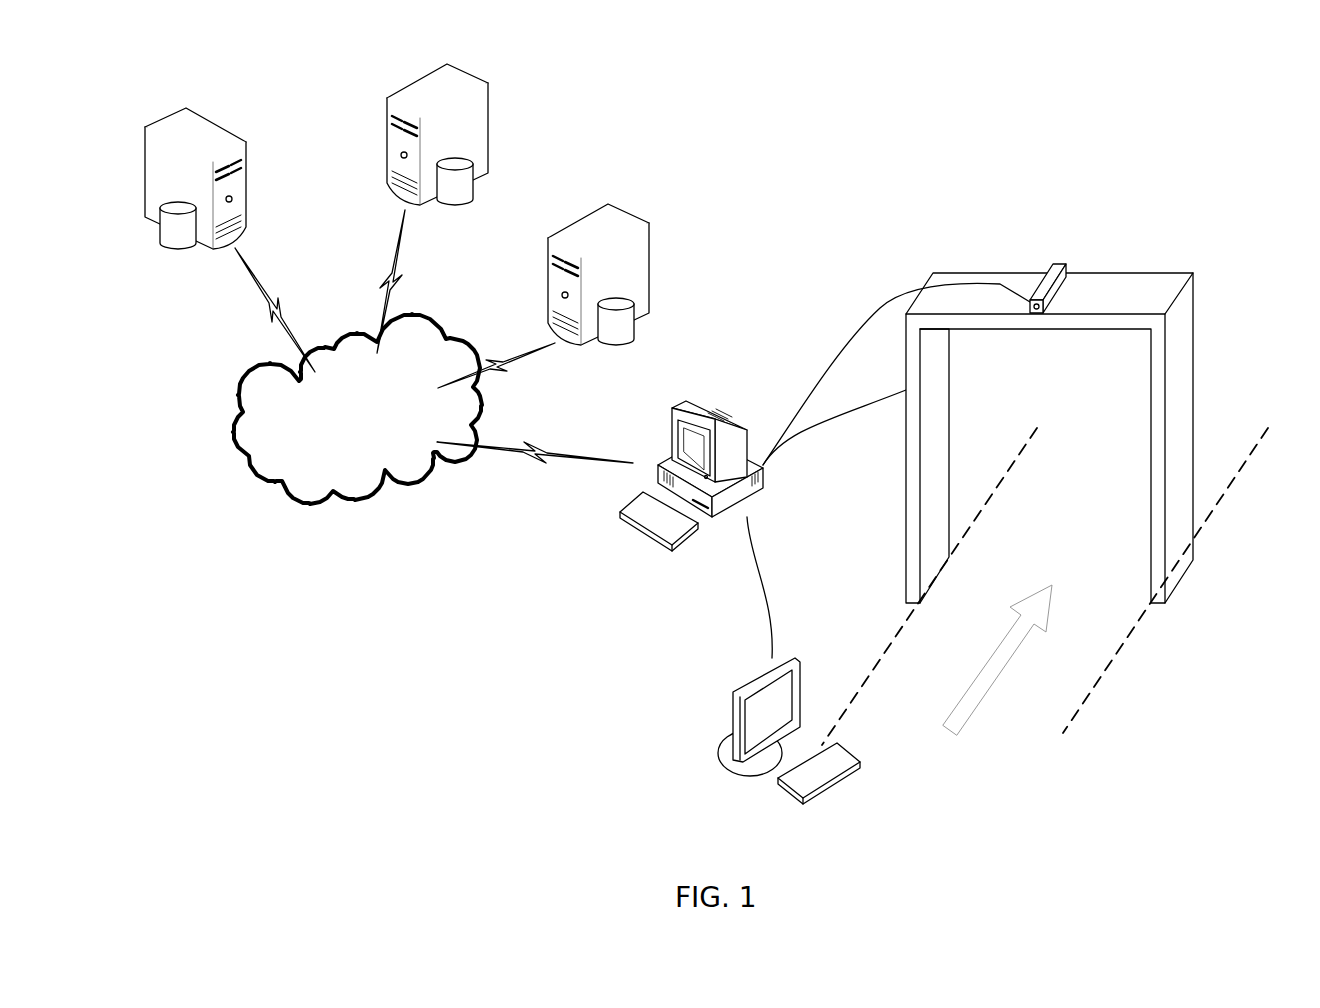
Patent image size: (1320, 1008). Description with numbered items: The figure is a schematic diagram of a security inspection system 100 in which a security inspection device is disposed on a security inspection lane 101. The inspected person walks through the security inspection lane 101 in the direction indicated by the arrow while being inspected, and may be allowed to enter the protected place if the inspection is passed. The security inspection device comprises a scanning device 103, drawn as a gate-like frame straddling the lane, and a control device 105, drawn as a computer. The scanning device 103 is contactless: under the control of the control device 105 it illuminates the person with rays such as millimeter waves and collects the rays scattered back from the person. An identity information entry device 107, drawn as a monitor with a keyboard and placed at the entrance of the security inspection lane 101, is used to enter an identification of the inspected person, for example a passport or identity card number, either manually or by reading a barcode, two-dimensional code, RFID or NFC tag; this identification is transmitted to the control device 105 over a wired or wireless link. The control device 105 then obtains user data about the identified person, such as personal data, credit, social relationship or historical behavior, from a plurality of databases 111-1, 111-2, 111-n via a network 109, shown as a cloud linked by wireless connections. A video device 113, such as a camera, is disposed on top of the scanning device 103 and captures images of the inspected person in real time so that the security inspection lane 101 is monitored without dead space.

The security inspection system 100 is at (1118, 62).
The security inspection lane 101 is at (1082, 705).
The scanning device 103 is at (1178, 565).
The control device 105 is at (722, 410).
The identity information entry device 107 is at (738, 688).
The network 109 is at (433, 357).
The database 111-1 is at (208, 171).
The database 111-2 is at (454, 128).
The database 111-n is at (623, 268).
The video device 113 is at (1063, 268).